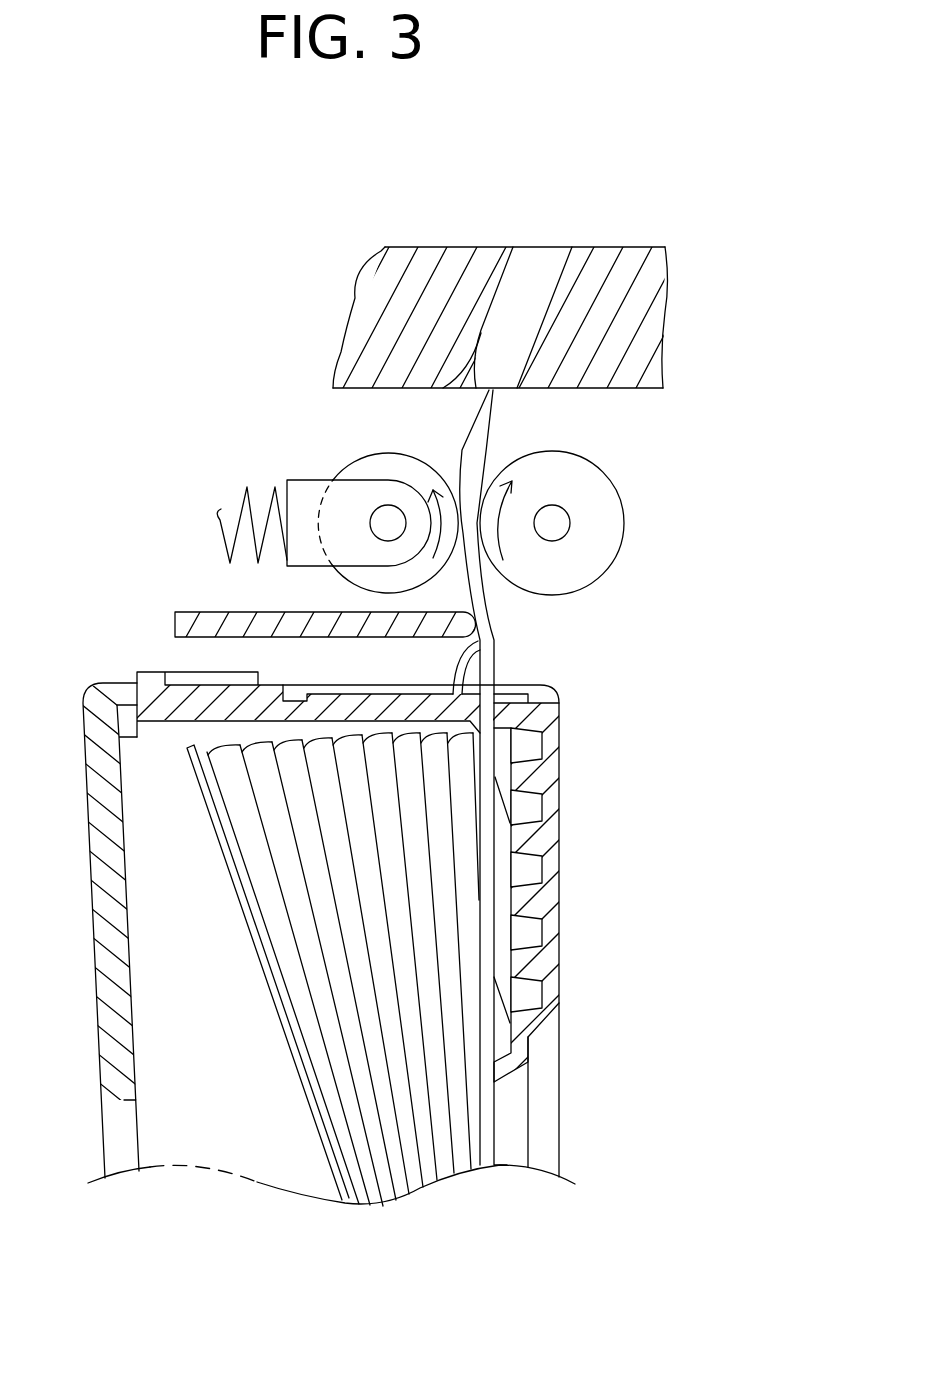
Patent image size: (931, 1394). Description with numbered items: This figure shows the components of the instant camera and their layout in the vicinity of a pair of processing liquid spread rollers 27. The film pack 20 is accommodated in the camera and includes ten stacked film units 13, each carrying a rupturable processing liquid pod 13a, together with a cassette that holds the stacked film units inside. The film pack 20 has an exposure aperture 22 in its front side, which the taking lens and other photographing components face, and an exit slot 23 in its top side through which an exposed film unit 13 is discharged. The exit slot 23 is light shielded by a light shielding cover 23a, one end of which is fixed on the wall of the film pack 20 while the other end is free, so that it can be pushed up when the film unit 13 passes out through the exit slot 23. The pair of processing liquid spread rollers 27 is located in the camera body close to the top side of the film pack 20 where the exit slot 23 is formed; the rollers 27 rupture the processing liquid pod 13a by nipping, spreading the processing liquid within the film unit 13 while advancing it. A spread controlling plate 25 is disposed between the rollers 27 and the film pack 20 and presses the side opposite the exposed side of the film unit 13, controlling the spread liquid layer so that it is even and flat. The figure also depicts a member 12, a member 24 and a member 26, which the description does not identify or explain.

The guide block 12 is at (535, 247).
The film unit 13 is at (312, 1148).
The rupturable processing liquid pod 13a is at (468, 868).
The film pack 20 is at (108, 674).
The exposure aperture 22 is at (507, 1083).
The exit slot 23 is at (467, 717).
The light shielding cover 23a is at (465, 655).
The sheet 24 is at (492, 425).
The spread controlling plate 25 is at (218, 612).
The slot 26 is at (467, 389).
The pair of processing liquid spread rollers 27 is at (333, 459).